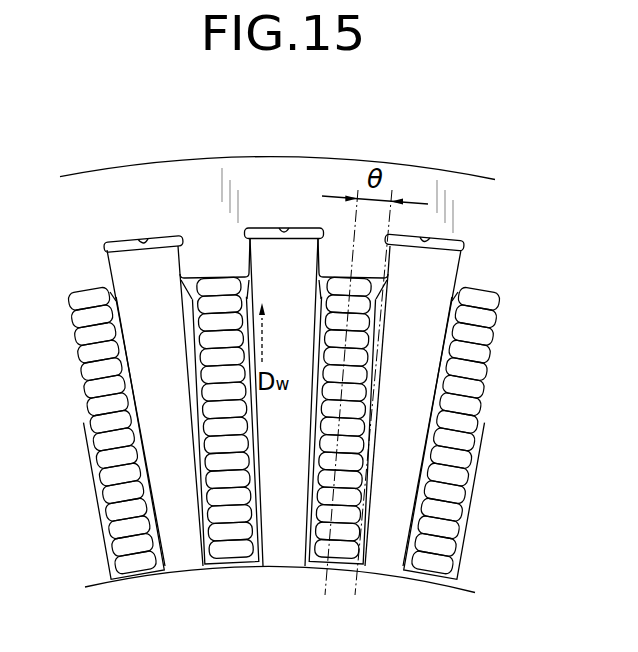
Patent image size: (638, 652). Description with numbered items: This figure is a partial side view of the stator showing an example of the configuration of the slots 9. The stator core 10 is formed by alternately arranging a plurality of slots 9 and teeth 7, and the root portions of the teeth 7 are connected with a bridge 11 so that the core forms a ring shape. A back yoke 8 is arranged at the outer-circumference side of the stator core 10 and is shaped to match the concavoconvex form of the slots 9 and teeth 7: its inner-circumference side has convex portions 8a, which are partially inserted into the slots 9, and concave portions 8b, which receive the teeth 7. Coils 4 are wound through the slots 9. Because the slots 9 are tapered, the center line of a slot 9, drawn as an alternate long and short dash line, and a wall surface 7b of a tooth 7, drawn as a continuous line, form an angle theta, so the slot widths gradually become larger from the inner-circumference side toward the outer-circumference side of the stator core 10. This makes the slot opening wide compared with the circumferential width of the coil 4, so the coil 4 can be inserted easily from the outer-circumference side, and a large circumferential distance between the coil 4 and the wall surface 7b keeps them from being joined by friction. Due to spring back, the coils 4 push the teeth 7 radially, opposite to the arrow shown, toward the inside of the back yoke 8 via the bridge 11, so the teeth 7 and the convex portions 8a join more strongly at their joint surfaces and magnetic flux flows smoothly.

The coil 4 is at (226, 407).
The tooth 7 is at (177, 513).
The wall surface 7b is at (368, 362).
The back yoke 8 is at (463, 164).
The convex portion 8a is at (213, 250).
The concave portion 8b is at (141, 243).
The slot 9 is at (193, 292).
The stator core 10 is at (122, 588).
The bridge 11 is at (141, 574).